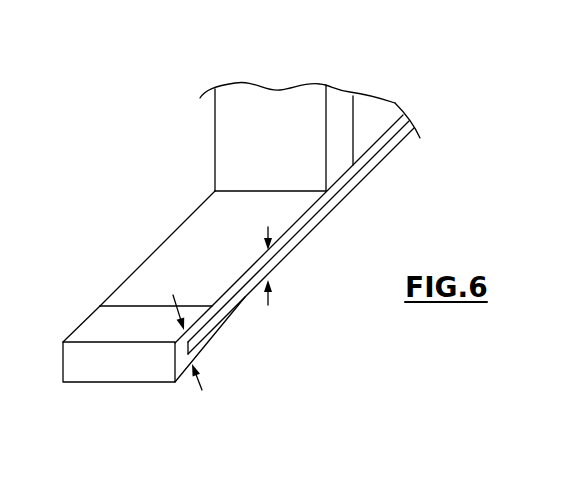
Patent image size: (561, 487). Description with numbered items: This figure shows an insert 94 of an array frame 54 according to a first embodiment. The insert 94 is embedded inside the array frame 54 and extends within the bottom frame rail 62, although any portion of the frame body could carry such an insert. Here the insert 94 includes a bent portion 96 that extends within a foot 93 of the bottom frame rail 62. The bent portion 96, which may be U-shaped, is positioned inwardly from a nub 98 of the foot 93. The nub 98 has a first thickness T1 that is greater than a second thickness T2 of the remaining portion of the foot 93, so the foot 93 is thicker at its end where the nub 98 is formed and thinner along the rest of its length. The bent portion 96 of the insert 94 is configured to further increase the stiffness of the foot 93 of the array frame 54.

The array frame 54 is at (331, 90).
The bottom frame rail 62 is at (374, 158).
The foot 93 is at (176, 262).
The insert 94 is at (310, 226).
The bent portion 96 is at (218, 345).
The nub 98 is at (100, 327).
The first thickness T1 is at (202, 390).
The second thickness T2 is at (268, 305).